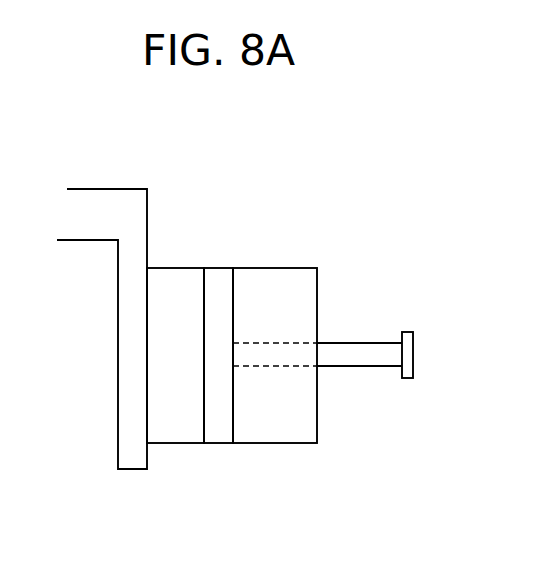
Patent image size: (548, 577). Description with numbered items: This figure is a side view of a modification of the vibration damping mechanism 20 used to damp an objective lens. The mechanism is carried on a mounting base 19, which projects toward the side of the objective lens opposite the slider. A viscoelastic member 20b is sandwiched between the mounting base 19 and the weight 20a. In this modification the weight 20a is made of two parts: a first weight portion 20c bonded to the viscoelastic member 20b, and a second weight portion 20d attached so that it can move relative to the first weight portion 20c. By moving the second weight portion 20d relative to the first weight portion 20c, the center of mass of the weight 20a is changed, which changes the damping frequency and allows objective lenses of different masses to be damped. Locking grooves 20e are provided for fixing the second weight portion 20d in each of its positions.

The mounting base 19 is at (100, 200).
The vibration damping mechanism 20 is at (352, 162).
The weight 20a is at (347, 200).
The viscoelastic member 20b is at (175, 268).
The first weight portion 20c is at (220, 268).
The second weight portion 20d is at (287, 268).
The locking grooves 20e is at (276, 345).